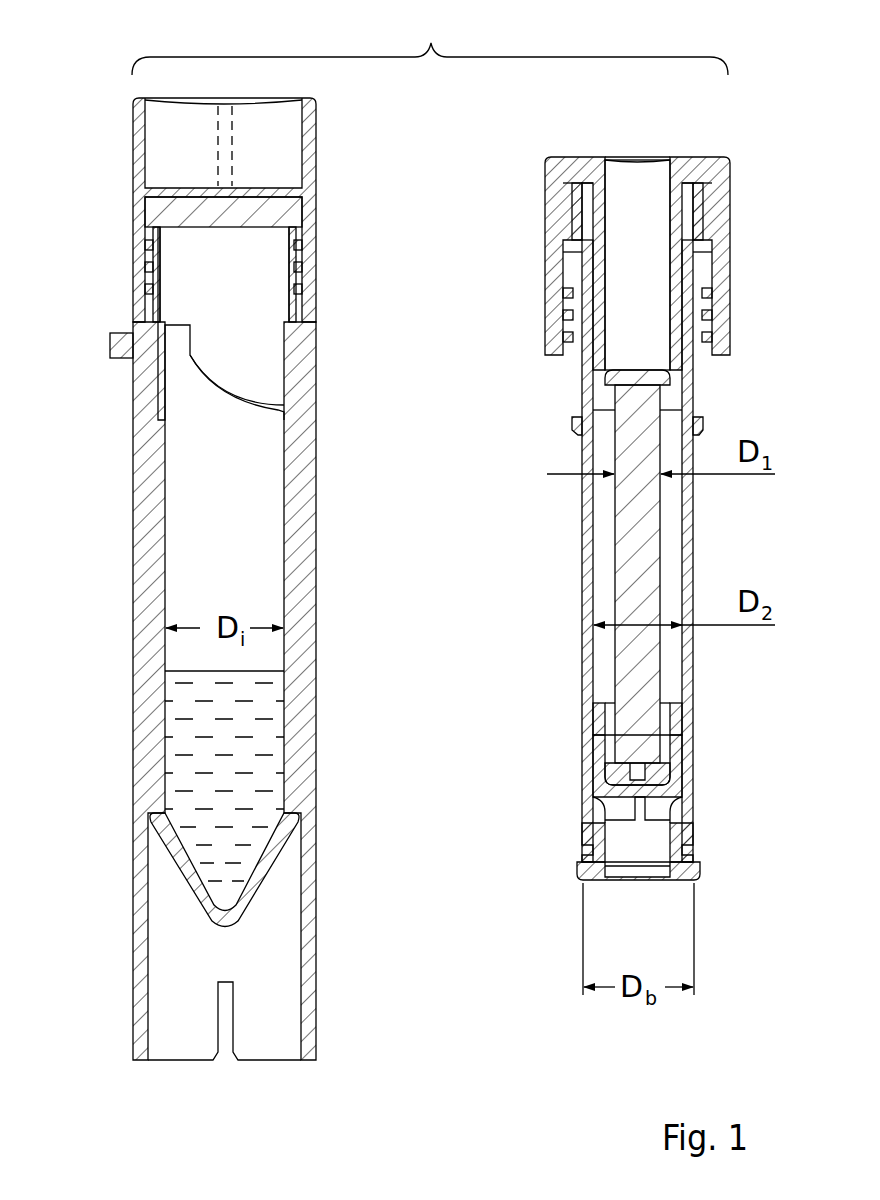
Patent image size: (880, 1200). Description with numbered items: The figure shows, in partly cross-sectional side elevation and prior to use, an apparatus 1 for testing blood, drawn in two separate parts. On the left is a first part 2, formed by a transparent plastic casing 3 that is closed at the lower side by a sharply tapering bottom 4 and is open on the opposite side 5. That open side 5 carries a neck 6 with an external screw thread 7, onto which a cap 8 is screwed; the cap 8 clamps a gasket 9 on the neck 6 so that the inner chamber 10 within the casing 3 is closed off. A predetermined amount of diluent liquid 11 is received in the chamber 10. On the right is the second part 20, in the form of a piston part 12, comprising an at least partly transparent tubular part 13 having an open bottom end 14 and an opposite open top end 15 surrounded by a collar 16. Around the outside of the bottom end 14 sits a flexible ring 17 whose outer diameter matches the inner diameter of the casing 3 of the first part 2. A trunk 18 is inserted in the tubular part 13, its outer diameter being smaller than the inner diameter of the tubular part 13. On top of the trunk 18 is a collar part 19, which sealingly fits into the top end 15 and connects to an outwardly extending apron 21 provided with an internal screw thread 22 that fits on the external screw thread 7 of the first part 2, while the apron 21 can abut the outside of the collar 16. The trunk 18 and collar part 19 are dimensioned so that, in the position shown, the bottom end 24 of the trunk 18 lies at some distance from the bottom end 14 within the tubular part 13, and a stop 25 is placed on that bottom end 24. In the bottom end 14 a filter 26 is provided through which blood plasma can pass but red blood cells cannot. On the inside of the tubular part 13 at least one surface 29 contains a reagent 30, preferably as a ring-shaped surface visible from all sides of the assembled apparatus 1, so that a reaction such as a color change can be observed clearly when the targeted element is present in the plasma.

The apparatus 1 is at (430, 43).
The first part 2 is at (118, 168).
The transparent plastic casing 3 is at (131, 562).
The sharply tapering bottom 4 is at (225, 932).
The open side 5 is at (255, 246).
The neck 6 is at (298, 292).
The external screw thread 7 is at (140, 286).
The cap 8 is at (313, 213).
The gasket 9 is at (155, 213).
The chamber 10 is at (178, 342).
The diluent liquid 11 is at (190, 748).
The piston part 12 is at (581, 533).
The tubular part 13 is at (687, 396).
The open bottom end 14 is at (628, 886).
The open top end 15 is at (583, 212).
The collar 16 is at (705, 212).
The flexible ring 17 is at (592, 838).
The trunk 18 is at (638, 533).
The collar part 19 is at (602, 195).
The second part 20 is at (742, 293).
The apron 21 is at (583, 170).
The internal screw thread 22 is at (570, 350).
The bottom end of the trunk 24 is at (640, 750).
The stop 25 is at (674, 770).
The filter 26 is at (653, 868).
The surface 29 is at (610, 720).
The reagent 30 is at (674, 718).